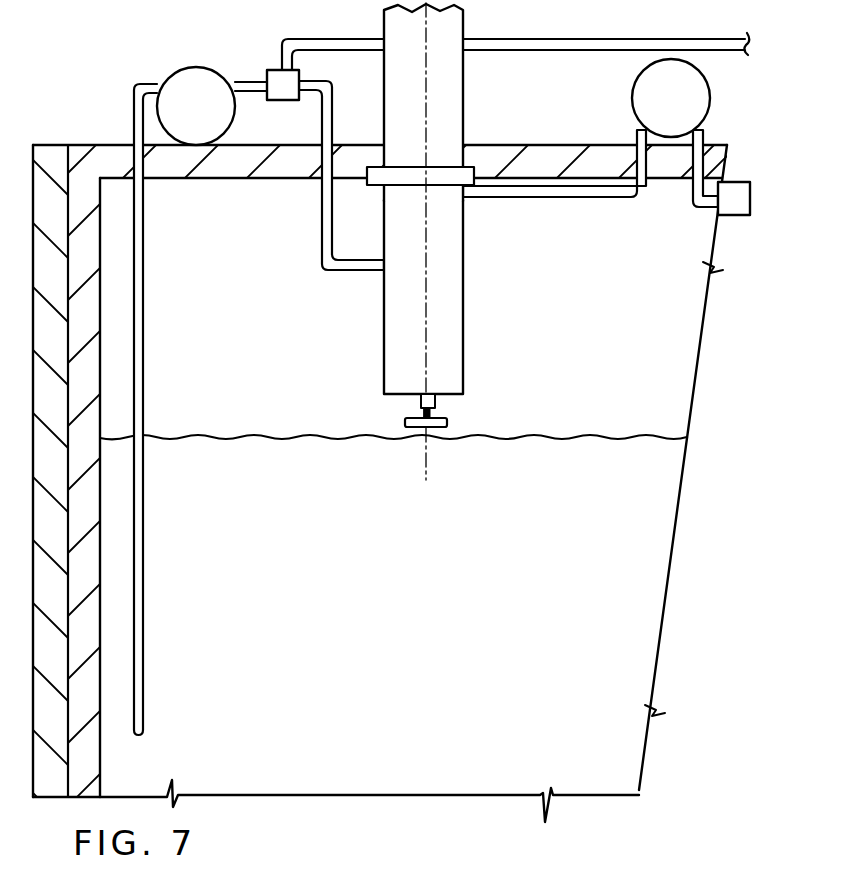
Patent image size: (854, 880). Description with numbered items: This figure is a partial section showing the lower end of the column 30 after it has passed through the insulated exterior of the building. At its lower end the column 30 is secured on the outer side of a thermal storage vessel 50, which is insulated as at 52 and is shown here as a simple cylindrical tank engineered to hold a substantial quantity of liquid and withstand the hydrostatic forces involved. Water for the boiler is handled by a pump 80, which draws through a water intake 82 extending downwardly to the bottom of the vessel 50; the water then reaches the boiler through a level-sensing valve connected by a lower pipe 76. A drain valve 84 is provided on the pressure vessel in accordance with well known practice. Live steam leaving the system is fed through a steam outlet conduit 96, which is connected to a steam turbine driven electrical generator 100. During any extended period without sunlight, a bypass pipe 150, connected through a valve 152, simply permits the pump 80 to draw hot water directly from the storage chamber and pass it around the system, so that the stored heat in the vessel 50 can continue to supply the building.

The column 30 is at (463, 95).
The thermal storage vessel 50 is at (102, 535).
The insulation 52 is at (60, 625).
The lower pipe 76 is at (465, 308).
The pump 80 is at (182, 85).
The water intake 82 is at (144, 373).
The drain valve 84 is at (445, 417).
The steam outlet conduit 96 is at (550, 198).
The steam turbine driven electrical generator 100 is at (648, 97).
The bypass pipe 150 is at (283, 46).
The valve 152 is at (262, 72).